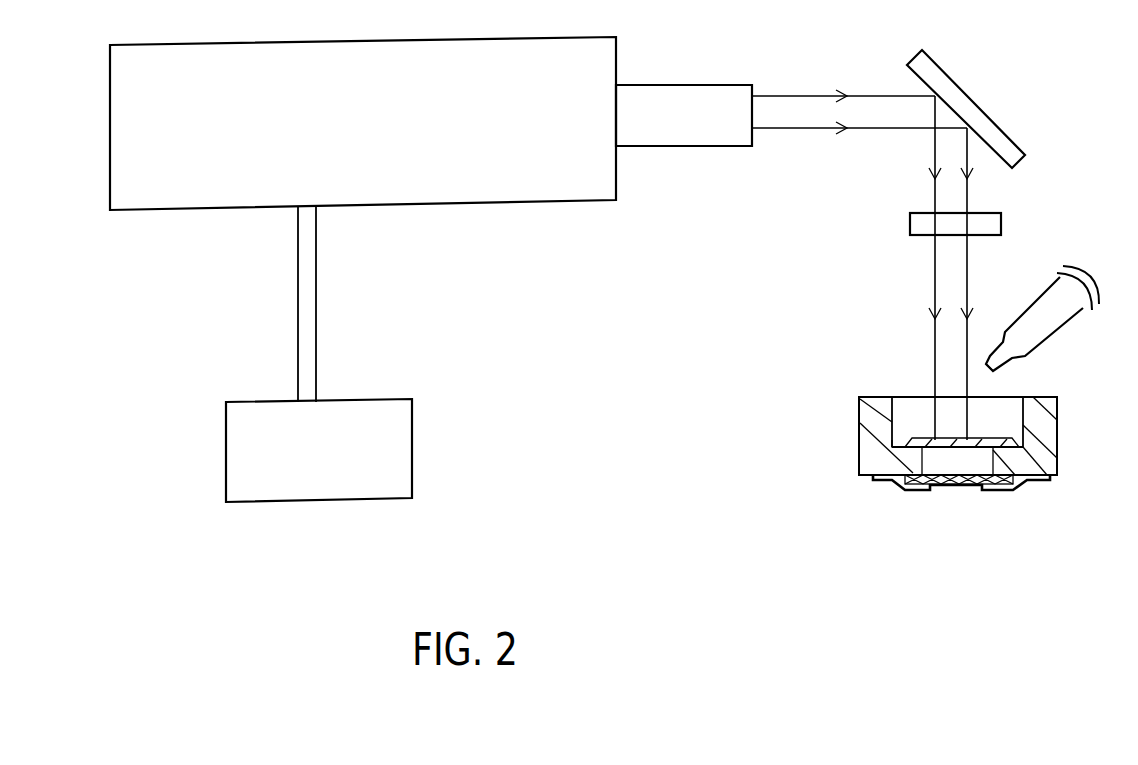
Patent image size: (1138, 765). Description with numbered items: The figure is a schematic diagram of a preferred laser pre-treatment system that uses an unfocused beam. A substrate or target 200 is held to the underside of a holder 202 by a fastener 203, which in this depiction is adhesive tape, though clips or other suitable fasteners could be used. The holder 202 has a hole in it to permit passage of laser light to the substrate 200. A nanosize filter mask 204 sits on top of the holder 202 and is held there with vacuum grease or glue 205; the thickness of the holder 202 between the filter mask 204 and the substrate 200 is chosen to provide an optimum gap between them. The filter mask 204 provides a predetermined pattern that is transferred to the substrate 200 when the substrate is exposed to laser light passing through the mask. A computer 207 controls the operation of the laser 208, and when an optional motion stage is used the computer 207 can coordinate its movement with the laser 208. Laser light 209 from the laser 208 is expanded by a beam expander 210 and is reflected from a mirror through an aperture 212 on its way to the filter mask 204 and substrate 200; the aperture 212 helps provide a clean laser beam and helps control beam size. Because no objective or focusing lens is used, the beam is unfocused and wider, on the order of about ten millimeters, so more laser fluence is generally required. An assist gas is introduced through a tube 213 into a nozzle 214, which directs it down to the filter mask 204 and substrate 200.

The substrate 200 is at (982, 482).
The holder 202 is at (983, 125).
The fastener 203 is at (885, 479).
The nanosize filter mask 204 is at (922, 440).
The vacuum grease or glue 205 is at (895, 440).
The computer 207 is at (390, 403).
The laser 208 is at (248, 175).
The laser light 209 is at (803, 93).
The beam expander 210 is at (685, 125).
The aperture 212 is at (923, 229).
The tube 213 is at (1050, 312).
The nozzle 214 is at (990, 367).